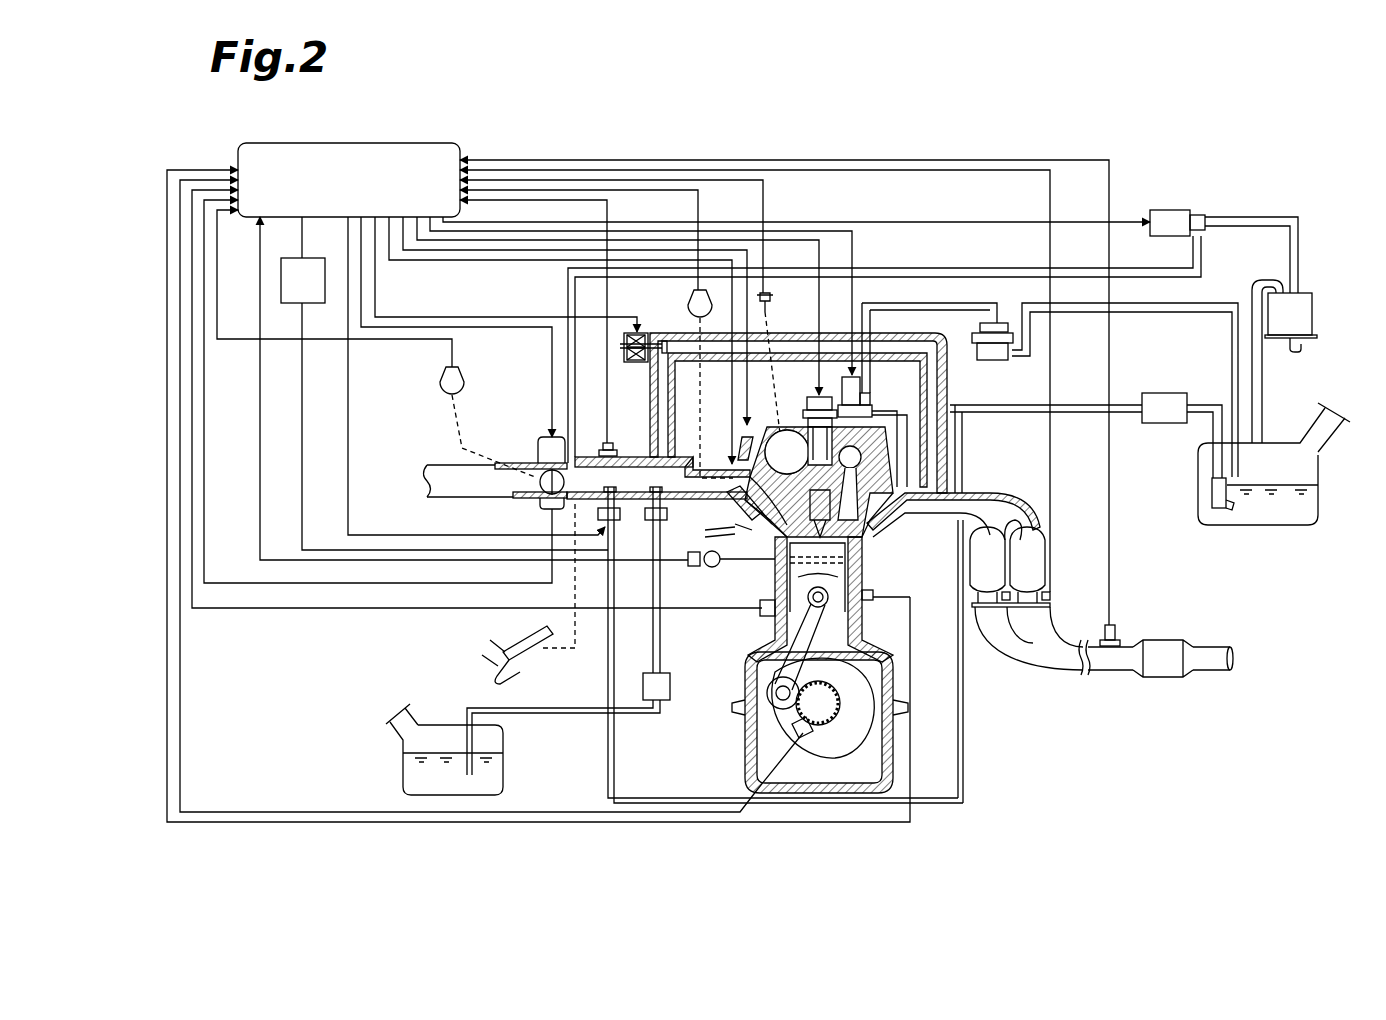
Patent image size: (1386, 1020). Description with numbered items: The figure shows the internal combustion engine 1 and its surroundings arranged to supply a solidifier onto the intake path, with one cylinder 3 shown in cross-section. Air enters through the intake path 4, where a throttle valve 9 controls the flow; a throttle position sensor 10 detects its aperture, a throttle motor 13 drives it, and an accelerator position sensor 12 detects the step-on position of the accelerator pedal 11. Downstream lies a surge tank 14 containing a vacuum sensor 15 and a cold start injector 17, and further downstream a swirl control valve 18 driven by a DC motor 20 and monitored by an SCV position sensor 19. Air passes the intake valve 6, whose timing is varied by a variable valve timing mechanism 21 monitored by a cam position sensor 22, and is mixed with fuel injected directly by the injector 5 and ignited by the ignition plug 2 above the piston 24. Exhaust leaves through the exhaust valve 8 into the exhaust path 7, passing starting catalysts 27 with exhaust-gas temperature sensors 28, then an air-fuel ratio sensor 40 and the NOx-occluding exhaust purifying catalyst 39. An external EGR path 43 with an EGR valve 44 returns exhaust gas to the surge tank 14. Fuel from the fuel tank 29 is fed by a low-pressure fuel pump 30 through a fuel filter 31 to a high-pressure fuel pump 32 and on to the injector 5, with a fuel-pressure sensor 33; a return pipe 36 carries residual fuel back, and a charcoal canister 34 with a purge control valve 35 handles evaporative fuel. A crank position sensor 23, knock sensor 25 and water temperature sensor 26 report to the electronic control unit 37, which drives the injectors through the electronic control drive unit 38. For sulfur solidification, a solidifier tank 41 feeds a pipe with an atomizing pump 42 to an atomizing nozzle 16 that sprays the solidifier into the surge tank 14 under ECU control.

The internal combustion engine 1 is at (977, 730).
The ignition plug 2 is at (863, 565).
The cylinder 3 is at (792, 572).
The intake path 4 is at (510, 468).
The injector 5 is at (740, 512).
The intake valve 6 is at (765, 538).
The exhaust path 7 is at (936, 505).
The exhaust valve 8 is at (862, 523).
The throttle valve 9 is at (512, 493).
The throttle position sensor 10 is at (441, 396).
The accelerator pedal 11 is at (537, 656).
The accelerator position sensor 12 is at (545, 505).
The throttle motor 13 is at (540, 450).
The surge tank 14 is at (626, 465).
The vacuum sensor 15 is at (603, 443).
The atomizing nozzle 16 is at (653, 505).
The cold start injector 17 is at (613, 490).
The swirl control valve 18 is at (716, 470).
The SCV position sensor 19 is at (687, 301).
The DC motor 20 is at (728, 455).
The variable valve timing mechanism 21 is at (790, 443).
The cam position sensor 22 is at (773, 297).
The crank position sensor 23 is at (795, 733).
The piston 24 is at (800, 605).
The knock sensor 25 is at (760, 614).
The water temperature sensor 26 is at (866, 603).
The starting catalyst 27 is at (1045, 558).
The exhaust-gas temperature sensor 28 is at (1048, 609).
The fuel tank 29 is at (1295, 517).
The low-pressure fuel pump 30 is at (1212, 495).
The fuel filter 31 is at (1163, 393).
The high-pressure fuel pump 32 is at (862, 388).
The fuel-pressure sensor 33 is at (705, 567).
The charcoal canister 34 is at (1312, 318).
The purge control valve 35 is at (1170, 210).
The return pipe 36 is at (1137, 312).
The electronic control unit 37 is at (406, 143).
The electronic control drive unit 38 is at (314, 258).
The NOx-occluding reduction-type exhaust purifying catalyst 39 is at (1163, 638).
The air-fuel ratio sensor 40 is at (1117, 632).
The solidifier tank 41 is at (403, 770).
The atomizing pump 42 is at (672, 687).
The external EGR path 43 is at (826, 343).
The EGR valve 44 is at (634, 362).